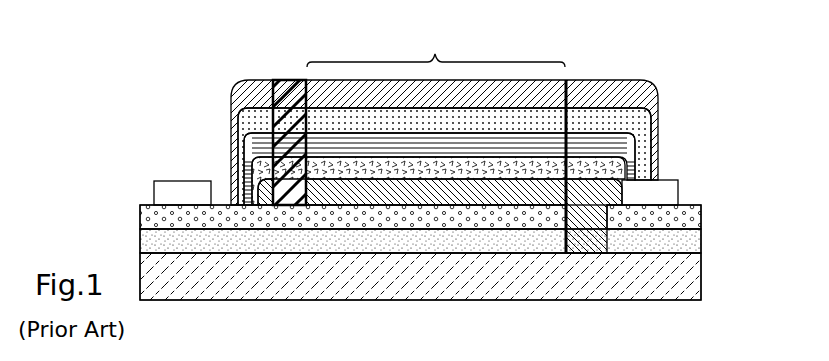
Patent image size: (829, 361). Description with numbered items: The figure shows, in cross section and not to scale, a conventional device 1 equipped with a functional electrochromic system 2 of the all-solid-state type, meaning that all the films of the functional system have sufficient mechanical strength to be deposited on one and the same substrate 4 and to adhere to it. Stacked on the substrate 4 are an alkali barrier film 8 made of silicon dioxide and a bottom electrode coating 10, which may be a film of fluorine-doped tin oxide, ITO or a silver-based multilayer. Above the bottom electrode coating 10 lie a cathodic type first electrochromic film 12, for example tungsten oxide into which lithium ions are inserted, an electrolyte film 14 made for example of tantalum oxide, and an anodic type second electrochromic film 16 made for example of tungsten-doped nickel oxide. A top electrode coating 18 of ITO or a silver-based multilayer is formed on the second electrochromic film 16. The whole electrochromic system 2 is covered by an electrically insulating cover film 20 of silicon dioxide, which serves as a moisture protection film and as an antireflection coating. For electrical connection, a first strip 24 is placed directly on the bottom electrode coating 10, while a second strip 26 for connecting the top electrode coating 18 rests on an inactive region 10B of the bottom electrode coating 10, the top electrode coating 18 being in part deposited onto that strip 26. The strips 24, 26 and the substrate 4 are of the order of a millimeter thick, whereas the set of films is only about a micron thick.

The device 1 is at (155, 38).
The functional electrochromic system 2 is at (634, 135).
The substrate 4 is at (204, 291).
The alkali barrier film 8 is at (148, 243).
The bottom electrode coating 10 is at (152, 214).
The inactive region of the bottom electrode coating 10B is at (690, 215).
The cathodic type first electrochromic film 12 is at (367, 195).
The electrolyte film 14 is at (327, 163).
The anodic type second electrochromic film 16 is at (372, 150).
The top electrode coating 18 is at (537, 120).
The electrically insulating cover film 20 is at (505, 90).
The first strip 24 is at (177, 190).
The second strip 26 is at (670, 191).